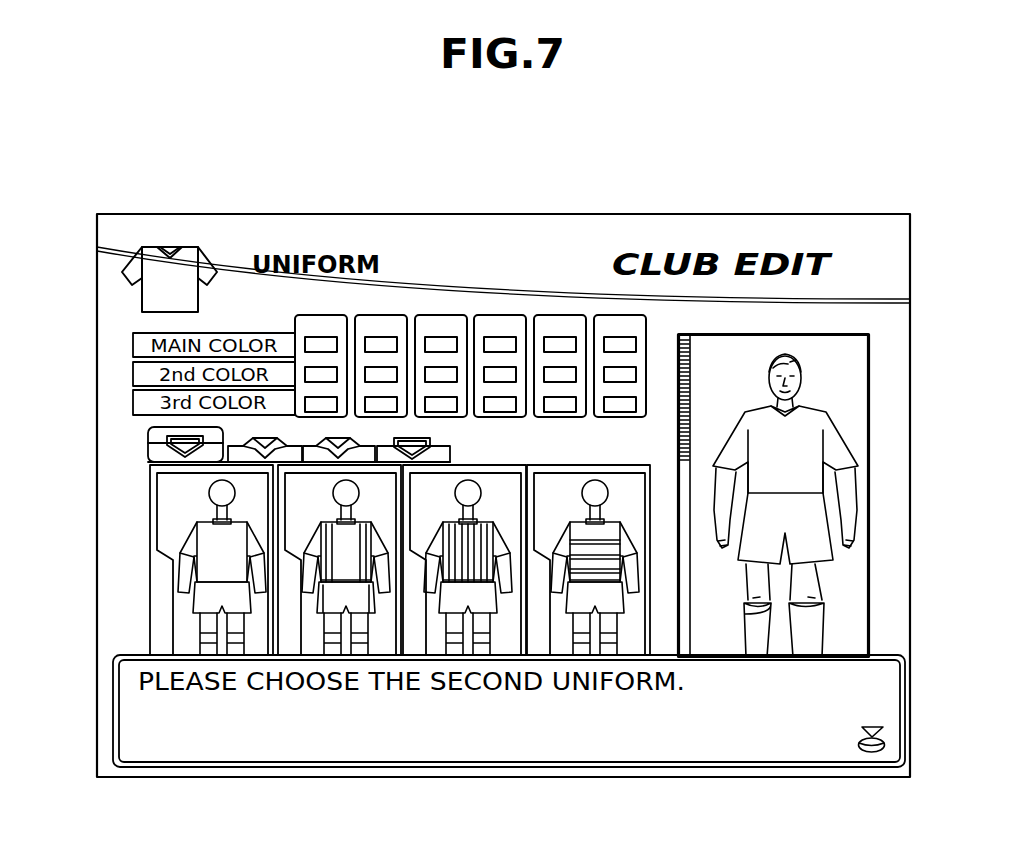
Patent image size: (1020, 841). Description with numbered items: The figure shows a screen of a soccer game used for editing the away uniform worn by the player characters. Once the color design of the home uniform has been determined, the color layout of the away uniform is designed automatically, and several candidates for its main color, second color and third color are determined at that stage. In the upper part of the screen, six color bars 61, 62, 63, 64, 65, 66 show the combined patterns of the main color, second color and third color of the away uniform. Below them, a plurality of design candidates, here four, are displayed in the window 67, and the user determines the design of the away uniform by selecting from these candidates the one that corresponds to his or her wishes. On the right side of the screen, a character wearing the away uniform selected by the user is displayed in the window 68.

The color bar 61 is at (312, 322).
The color bar 62 is at (400, 323).
The color bar 63 is at (457, 323).
The color bar 64 is at (493, 323).
The color bar 65 is at (543, 322).
The color bar 66 is at (603, 323).
The window 67 is at (182, 495).
The window 68 is at (840, 398).